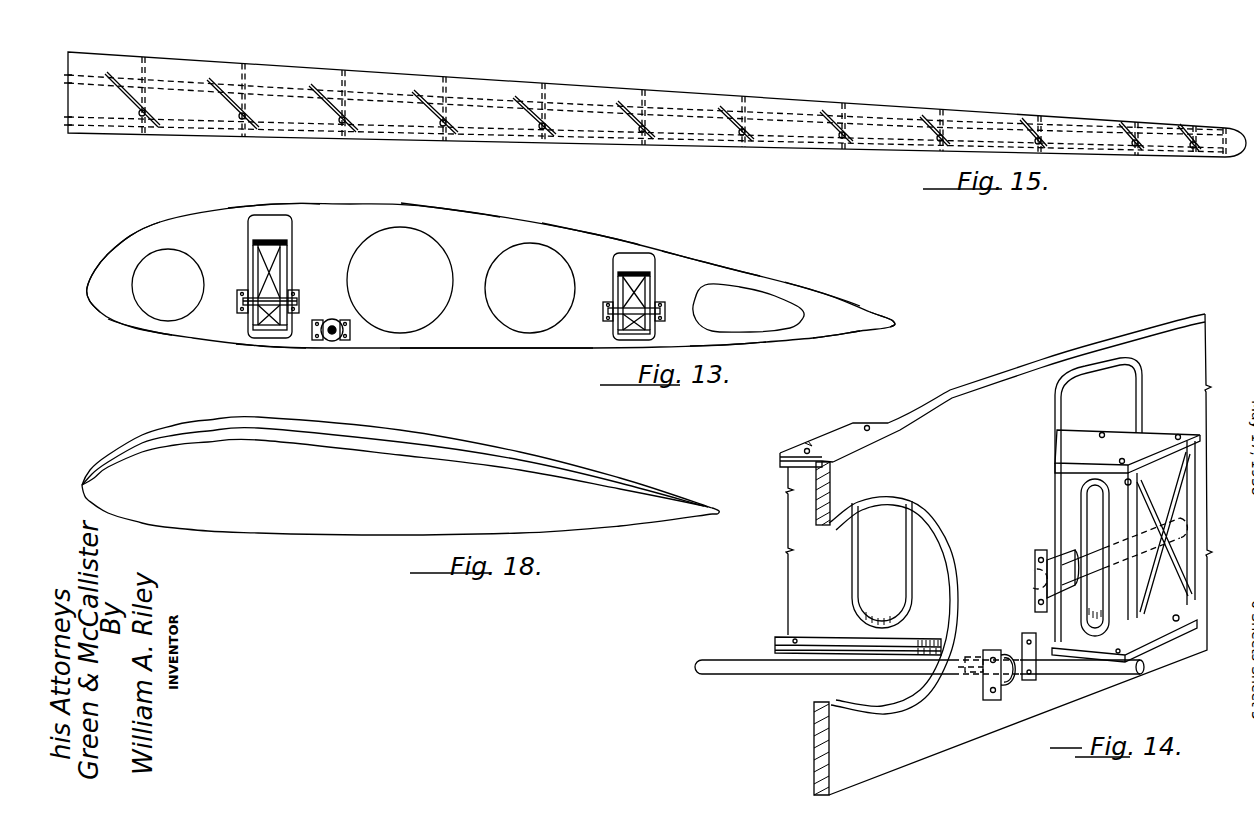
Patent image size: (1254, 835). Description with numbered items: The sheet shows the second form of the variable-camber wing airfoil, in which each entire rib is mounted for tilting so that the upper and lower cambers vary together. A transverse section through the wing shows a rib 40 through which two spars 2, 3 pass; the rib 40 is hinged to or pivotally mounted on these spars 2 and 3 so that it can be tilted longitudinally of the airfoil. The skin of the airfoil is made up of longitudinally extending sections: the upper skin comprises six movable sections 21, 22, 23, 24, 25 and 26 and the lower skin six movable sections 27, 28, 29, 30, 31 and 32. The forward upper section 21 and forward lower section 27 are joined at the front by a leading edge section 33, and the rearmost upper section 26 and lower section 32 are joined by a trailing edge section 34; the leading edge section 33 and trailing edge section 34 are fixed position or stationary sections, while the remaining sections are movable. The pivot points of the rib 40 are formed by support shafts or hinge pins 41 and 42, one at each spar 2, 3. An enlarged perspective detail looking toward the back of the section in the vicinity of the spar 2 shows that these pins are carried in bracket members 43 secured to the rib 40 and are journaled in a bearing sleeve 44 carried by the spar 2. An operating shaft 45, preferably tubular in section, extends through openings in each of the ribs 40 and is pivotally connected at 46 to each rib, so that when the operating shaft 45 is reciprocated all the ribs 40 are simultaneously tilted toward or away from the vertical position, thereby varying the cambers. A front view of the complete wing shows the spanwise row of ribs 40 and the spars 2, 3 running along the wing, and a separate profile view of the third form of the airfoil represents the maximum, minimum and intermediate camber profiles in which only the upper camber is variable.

In FIG. 13, the spar 2 is at (273, 241).
In FIG. 14, the spar 2 is at (1150, 435).
In FIG. 13, the spar 3 is at (652, 275).
In FIG. 13, the upper skin section 21 is at (140, 240).
In FIG. 13, the upper skin section 22 is at (267, 205).
In FIG. 13, the upper skin section 23 is at (440, 208).
In FIG. 13, the upper skin section 24 is at (585, 232).
In FIG. 13, the upper skin section 25 is at (700, 260).
In FIG. 13, the upper skin section 26 is at (820, 288).
In FIG. 13, the lower skin section 27 is at (135, 330).
In FIG. 13, the lower skin section 28 is at (260, 347).
In FIG. 13, the lower skin section 29 is at (463, 348).
In FIG. 13, the lower skin section 30 is at (560, 348).
In FIG. 13, the lower skin section 31 is at (740, 344).
In FIG. 13, the lower skin section 32 is at (828, 340).
In FIG. 13, the leading edge section 33 is at (87, 290).
In FIG. 13, the trailing edge section 34 is at (898, 323).
In FIG. 15, the rib 40 is at (517, 93).
In FIG. 13, the rib 40 is at (458, 244).
In FIG. 14, the rib 40 is at (957, 461).
In FIG. 13, the support shaft or hinge pin 41 is at (280, 297).
In FIG. 13, the support shaft or hinge pin 42 is at (612, 328).
In FIG. 13, the bracket member 43 is at (295, 302).
In FIG. 14, the bracket member 43 is at (1035, 580).
In FIG. 14, the bearing sleeve 44 is at (1094, 540).
In FIG. 13, the operating shaft 45 is at (335, 337).
In FIG. 14, the operating shaft 45 is at (1115, 676).
In FIG. 13, the pivotal connection 46 is at (310, 340).
In FIG. 14, the pivotal connection 46 is at (1003, 698).